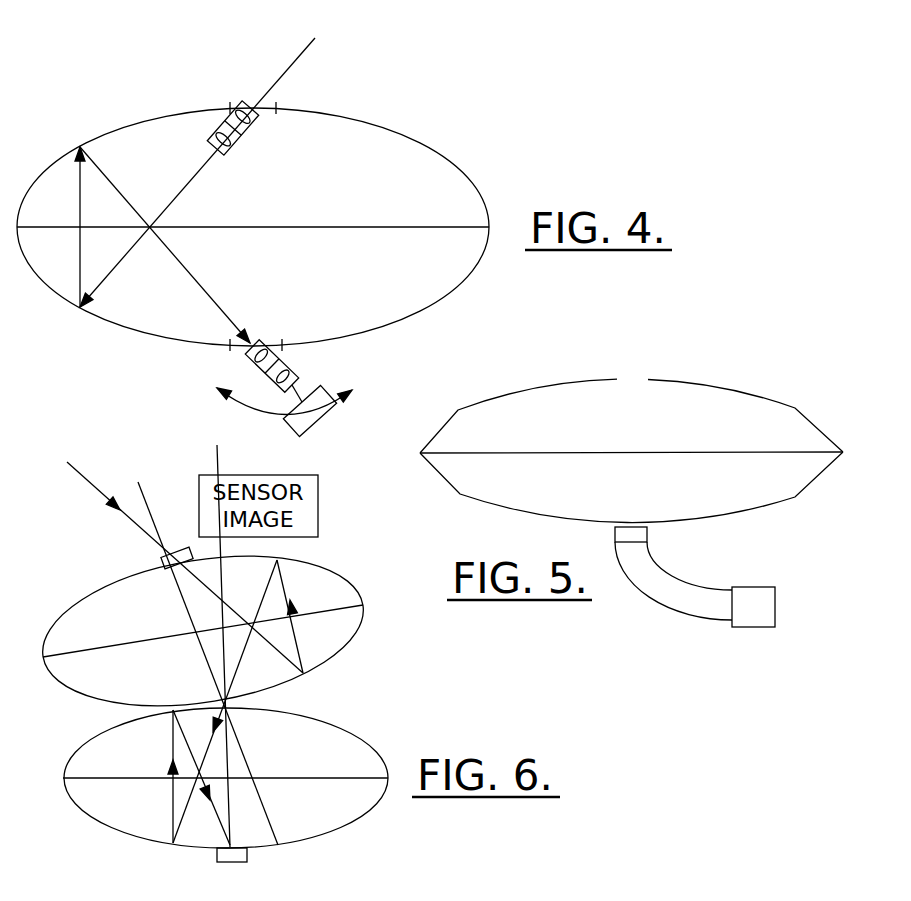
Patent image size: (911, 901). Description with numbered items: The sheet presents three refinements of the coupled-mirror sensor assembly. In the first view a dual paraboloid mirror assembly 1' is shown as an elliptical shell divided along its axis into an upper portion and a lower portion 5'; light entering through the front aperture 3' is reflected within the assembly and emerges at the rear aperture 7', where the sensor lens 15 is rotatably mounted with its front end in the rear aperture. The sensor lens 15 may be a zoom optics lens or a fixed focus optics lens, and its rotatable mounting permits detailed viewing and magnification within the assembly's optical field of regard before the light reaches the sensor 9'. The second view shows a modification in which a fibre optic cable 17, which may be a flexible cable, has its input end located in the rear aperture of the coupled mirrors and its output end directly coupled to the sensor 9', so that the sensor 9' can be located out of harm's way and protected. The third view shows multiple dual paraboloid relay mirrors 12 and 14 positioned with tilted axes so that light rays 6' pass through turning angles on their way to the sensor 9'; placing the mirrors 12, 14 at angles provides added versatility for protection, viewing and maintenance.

In FIG. 4, the ellipsoidal reflector 1' is at (253, 156).
In FIG. 5, the ellipsoidal reflector 1' is at (631, 408).
In FIG. 4, the entrance aperture 3' is at (255, 128).
In FIG. 5, the entrance aperture 3' is at (611, 356).
In FIG. 4, the lower reflector half 5' is at (253, 286).
In FIG. 5, the lower reflector half 5' is at (631, 499).
In FIG. 6, the light rays 6' is at (185, 567).
In FIG. 4, the exit aperture 7' is at (278, 322).
In FIG. 4, the sensor 9' is at (291, 414).
In FIG. 5, the sensor 9' is at (758, 581).
In FIG. 6, the sensor 9' is at (246, 873).
In FIG. 6, the dual paraboloid mirror 12 is at (102, 583).
In FIG. 6, the dual paraboloid mirror 14 is at (100, 723).
In FIG. 4, the sensor lens 15 is at (276, 387).
In FIG. 5, the fibre optic cable 17 is at (667, 570).